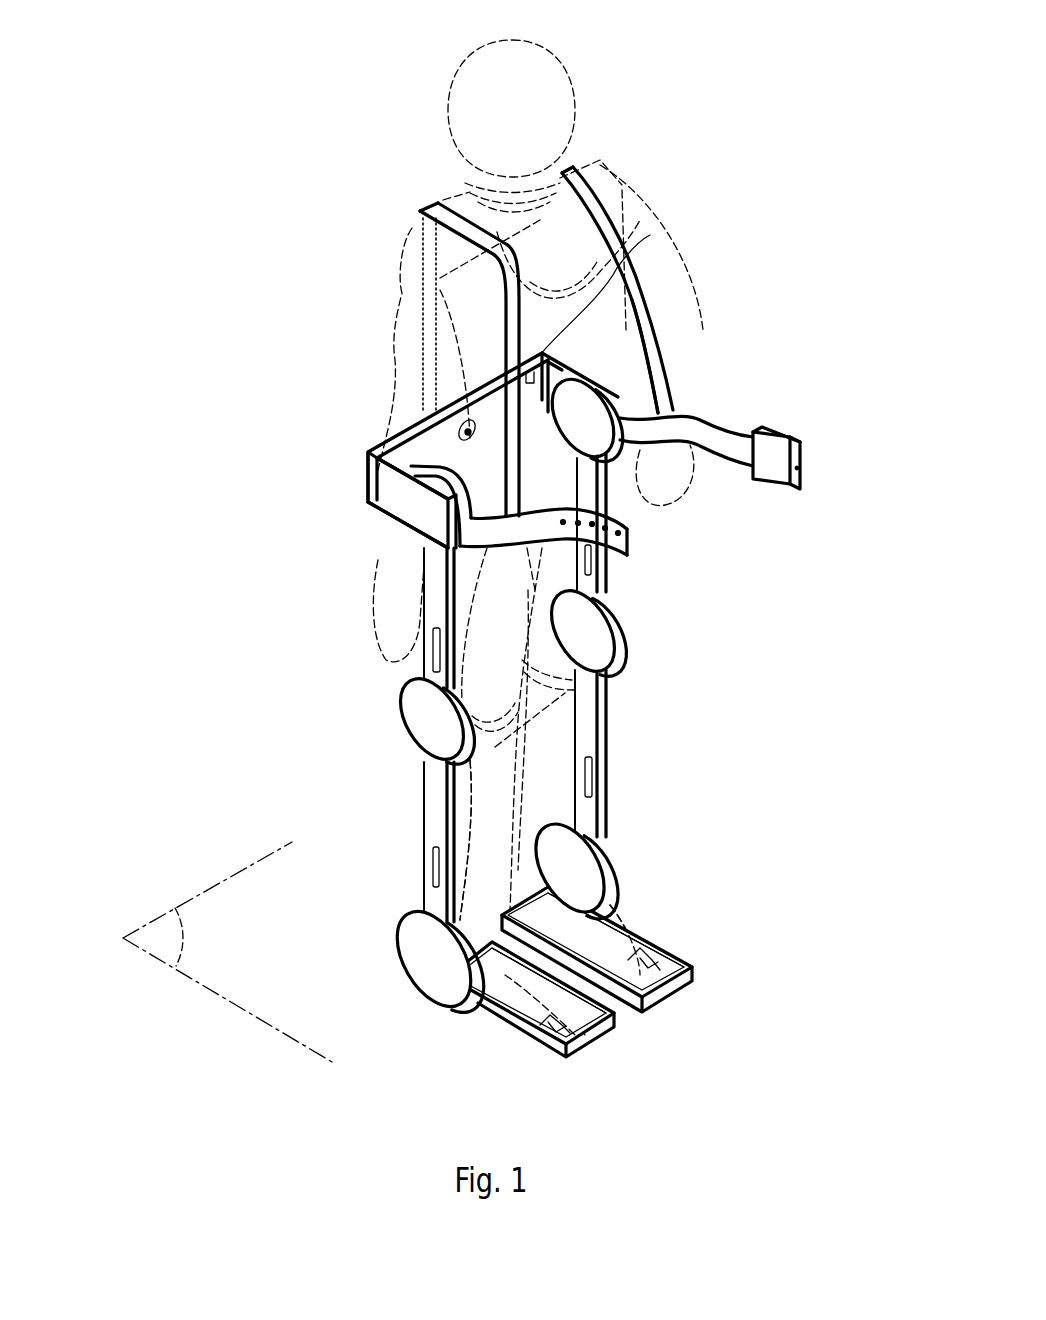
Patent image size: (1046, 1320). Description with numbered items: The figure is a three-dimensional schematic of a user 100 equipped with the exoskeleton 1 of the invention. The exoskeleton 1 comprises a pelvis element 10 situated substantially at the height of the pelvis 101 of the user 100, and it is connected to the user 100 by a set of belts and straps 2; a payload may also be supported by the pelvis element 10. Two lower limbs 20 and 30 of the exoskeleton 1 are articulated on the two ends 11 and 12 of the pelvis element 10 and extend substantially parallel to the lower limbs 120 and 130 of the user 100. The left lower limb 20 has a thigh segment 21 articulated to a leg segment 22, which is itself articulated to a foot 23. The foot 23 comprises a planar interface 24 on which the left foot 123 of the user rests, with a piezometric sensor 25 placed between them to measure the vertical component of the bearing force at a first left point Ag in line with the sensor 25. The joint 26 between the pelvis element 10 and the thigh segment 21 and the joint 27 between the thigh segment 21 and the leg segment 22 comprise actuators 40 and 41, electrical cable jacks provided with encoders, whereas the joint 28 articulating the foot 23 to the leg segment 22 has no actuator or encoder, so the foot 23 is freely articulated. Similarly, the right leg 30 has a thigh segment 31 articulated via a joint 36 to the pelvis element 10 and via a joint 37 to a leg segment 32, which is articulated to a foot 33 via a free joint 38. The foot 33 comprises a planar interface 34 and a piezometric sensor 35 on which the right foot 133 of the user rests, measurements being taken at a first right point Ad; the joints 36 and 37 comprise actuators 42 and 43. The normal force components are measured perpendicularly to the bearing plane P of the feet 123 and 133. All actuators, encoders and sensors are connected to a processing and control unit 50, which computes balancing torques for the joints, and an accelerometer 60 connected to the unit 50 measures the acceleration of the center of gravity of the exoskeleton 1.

The user 100 is at (385, 148).
The exoskeleton 1 is at (690, 354).
The pelvis element 10 is at (447, 444).
The end of the pelvis element 11 is at (370, 484).
The joint 36 is at (380, 478).
The pelvis of the user 101 is at (372, 482).
The accelerometer 60 is at (455, 392).
The processing and control unit 50 is at (598, 306).
The end of the pelvis element 12 is at (638, 320).
The actuator 40 is at (628, 526).
The belts and straps 2 is at (730, 440).
The joint 26 is at (644, 434).
The left lower limb 20 is at (684, 548).
The thigh segment 21 is at (627, 618).
The leg segment 22 is at (595, 690).
The joint 27 is at (621, 633).
The joint 28 is at (605, 843).
The actuator 41 is at (598, 757).
The lower limb of the user 120 is at (568, 738).
The left foot of the user 123 is at (650, 920).
The foot 23 is at (700, 976).
The planar interface 24 is at (682, 964).
The piezometric sensor 25 is at (656, 966).
The first left point Ag is at (658, 970).
The right lower limb 30 is at (413, 629).
The thigh segment 31 is at (390, 625).
The leg segment 32 is at (402, 842).
The joint 37 is at (416, 721).
The joint 38 is at (426, 951).
The actuator 42 is at (434, 649).
The actuator 43 is at (434, 874).
The lower limb of the user 130 is at (460, 801).
The right foot of the user 133 is at (481, 1012).
The foot 33 is at (641, 1032).
The planar interface 34 is at (500, 1042).
The piezometric sensor 35 is at (549, 1056).
The first right point Ad is at (582, 1040).
The bearing plane P is at (227, 952).